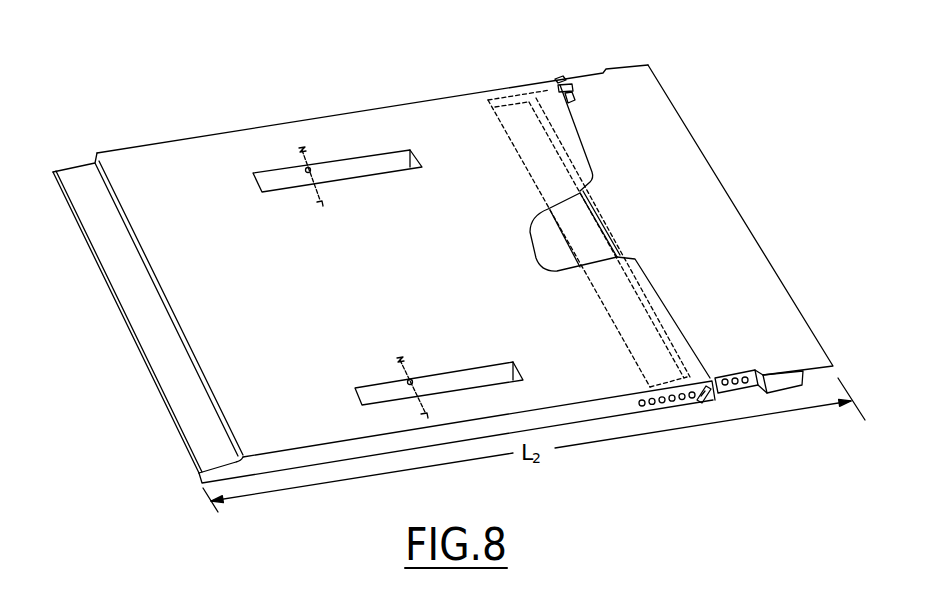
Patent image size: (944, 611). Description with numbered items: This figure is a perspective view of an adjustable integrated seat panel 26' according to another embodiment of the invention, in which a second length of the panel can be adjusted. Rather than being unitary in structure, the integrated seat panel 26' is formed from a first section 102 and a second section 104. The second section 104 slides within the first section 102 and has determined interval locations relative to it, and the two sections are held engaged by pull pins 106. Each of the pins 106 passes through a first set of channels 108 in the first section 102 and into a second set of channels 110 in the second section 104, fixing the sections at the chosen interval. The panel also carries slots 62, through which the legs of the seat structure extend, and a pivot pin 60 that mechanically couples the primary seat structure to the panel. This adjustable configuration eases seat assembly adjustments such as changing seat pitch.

The first section 102 is at (262, 127).
The adjustable integrated seat panel 26' is at (405, 251).
The second section 104 is at (643, 64).
The pull pins 106 is at (559, 77).
The first set of channels 108 is at (659, 405).
The second set of channels 110 is at (748, 377).
The pivot pin 60 is at (318, 144).
The slots 62 is at (387, 173).